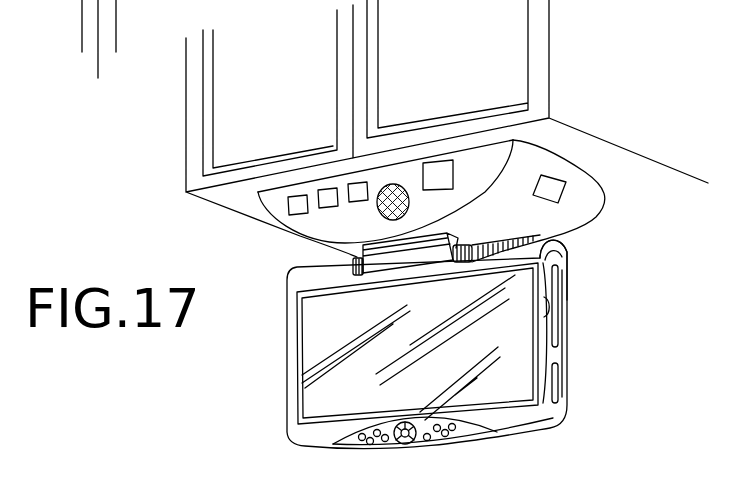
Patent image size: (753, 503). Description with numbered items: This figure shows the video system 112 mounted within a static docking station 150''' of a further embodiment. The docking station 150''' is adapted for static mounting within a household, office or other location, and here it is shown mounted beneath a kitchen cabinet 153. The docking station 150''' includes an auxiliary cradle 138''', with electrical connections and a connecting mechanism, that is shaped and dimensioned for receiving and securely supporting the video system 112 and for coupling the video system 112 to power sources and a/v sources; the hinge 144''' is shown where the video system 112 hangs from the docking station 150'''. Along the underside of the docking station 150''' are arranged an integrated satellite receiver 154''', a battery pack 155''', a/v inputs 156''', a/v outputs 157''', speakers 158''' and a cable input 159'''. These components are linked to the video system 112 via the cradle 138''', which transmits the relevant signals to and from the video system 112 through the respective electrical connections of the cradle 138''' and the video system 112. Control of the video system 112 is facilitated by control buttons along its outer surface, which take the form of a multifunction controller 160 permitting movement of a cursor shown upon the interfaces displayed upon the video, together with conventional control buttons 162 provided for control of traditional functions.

The video system 112 is at (293, 370).
The auxiliary cradle 138''' is at (493, 231).
The hinge 144''' is at (350, 254).
The docking station 150''' is at (591, 273).
The kitchen cabinet 153 is at (566, 135).
The integrated satellite receiver 154''' is at (265, 168).
The battery pack 155''' is at (299, 154).
The a/v inputs 156''' is at (329, 138).
The a/v outputs 157''' is at (455, 133).
The speakers 158''' is at (393, 161).
The cable input 159''' is at (631, 206).
The multifunction controller 160 is at (405, 445).
The control buttons 162 is at (428, 439).